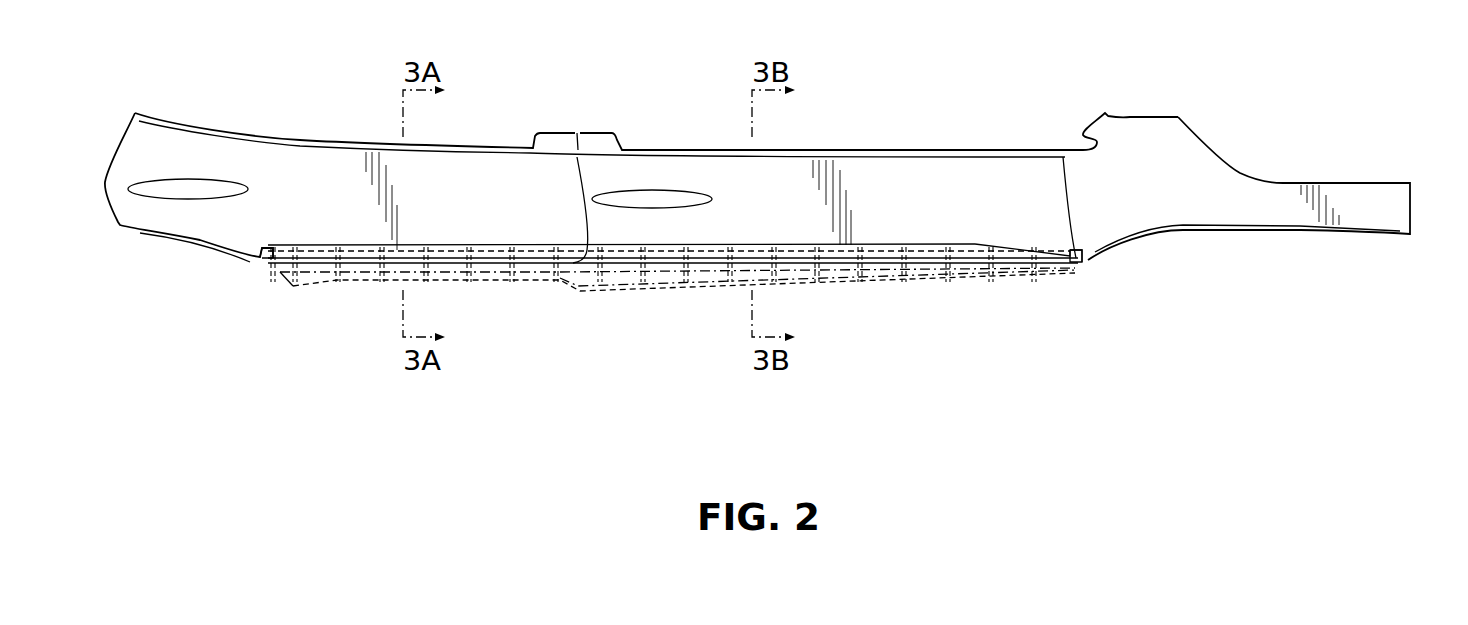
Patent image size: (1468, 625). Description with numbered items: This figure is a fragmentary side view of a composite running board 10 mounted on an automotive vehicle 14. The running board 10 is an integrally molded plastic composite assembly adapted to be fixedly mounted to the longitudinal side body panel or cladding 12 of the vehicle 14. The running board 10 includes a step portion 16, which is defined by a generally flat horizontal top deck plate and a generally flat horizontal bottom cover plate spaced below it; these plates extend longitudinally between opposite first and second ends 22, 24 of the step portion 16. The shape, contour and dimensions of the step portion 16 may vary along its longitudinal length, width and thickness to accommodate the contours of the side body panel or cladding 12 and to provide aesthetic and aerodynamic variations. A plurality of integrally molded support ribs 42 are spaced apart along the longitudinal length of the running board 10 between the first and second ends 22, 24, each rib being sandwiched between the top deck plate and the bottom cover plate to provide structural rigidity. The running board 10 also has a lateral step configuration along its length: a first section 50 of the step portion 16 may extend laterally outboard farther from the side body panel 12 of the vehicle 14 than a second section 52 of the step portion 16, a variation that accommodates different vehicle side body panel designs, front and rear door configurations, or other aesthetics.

The composite running board 10 is at (1122, 318).
The side body panel or cladding 12 is at (1183, 207).
The automotive vehicle 14 is at (1128, 112).
The step portion 16 is at (496, 279).
The first end 22 is at (278, 273).
The second end 24 is at (1077, 263).
The support ribs 42 is at (692, 273).
The first section 50 is at (808, 284).
The second section 52 is at (369, 278).